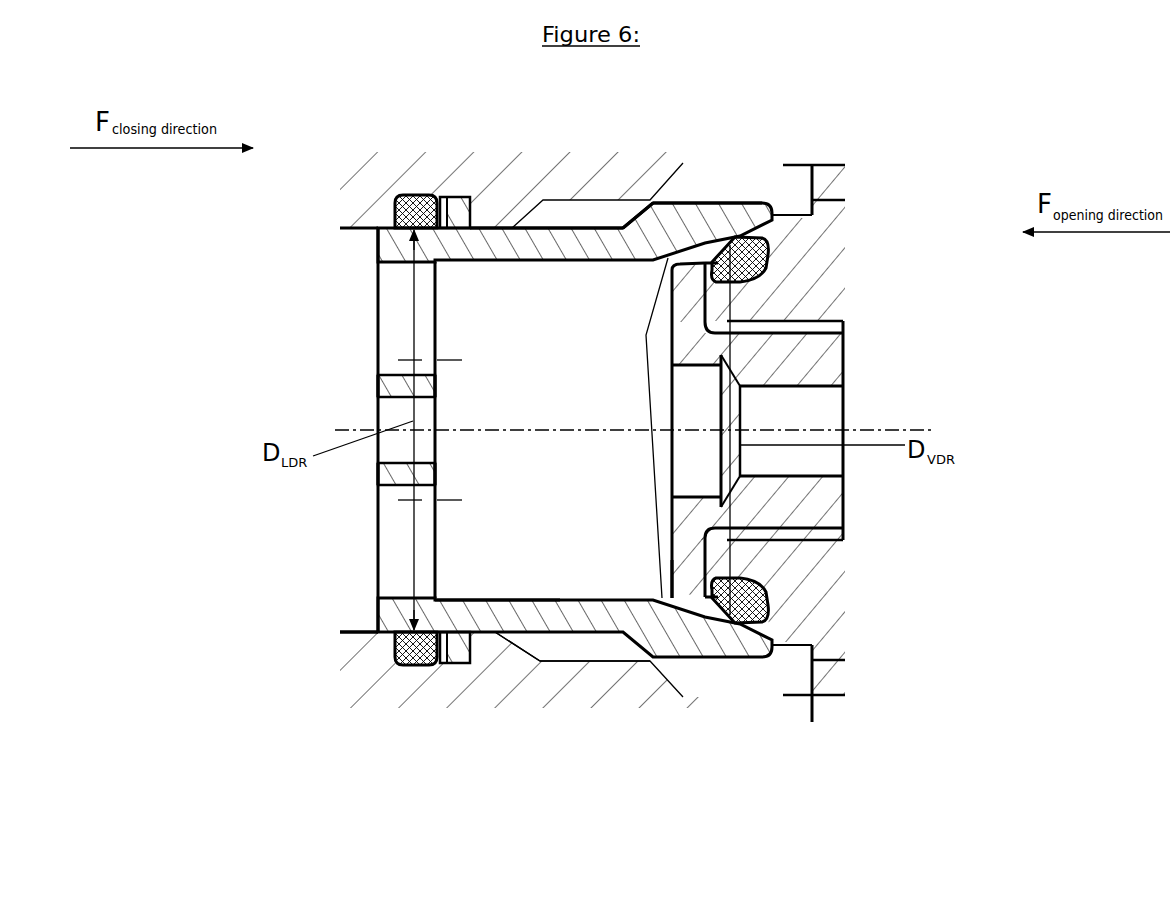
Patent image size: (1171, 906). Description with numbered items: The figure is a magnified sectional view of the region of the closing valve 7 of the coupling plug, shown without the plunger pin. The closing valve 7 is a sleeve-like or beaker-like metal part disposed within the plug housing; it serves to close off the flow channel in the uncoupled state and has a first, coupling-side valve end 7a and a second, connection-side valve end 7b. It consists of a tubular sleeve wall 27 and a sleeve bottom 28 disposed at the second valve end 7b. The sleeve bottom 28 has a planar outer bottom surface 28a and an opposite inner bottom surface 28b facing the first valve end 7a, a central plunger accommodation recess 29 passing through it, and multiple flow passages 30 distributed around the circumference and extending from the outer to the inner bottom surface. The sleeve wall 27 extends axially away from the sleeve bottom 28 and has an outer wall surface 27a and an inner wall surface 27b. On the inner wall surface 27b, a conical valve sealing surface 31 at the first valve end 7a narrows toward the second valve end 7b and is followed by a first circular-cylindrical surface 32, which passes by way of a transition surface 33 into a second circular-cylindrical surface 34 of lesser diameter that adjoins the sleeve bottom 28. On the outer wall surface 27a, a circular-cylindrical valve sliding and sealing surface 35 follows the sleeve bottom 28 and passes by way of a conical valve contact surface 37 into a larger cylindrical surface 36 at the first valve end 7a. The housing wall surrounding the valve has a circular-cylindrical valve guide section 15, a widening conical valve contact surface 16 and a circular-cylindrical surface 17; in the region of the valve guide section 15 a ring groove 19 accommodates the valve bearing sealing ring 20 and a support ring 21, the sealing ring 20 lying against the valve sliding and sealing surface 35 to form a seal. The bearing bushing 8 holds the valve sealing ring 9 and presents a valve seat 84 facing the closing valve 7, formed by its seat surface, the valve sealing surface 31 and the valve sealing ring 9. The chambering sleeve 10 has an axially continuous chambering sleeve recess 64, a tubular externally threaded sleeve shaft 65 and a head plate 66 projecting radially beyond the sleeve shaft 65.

The closing valve 7 is at (540, 247).
The first, coupling-side valve end 7a is at (782, 203).
The second, connection-side valve end 7b is at (357, 483).
The bearing bushing 8 is at (832, 275).
The valve sealing ring 9 is at (731, 243).
The chambering sleeve 10 is at (807, 511).
The circular-cylindrical valve guide section 15 is at (339, 691).
The widening, conical valve contact surface 16 is at (535, 697).
The circular-cylindrical surface 17 is at (595, 705).
The ring groove 19 is at (439, 197).
The valve bearing sealing ring 20 is at (403, 195).
The support ring 21 is at (462, 197).
The tubular sleeve wall 27 is at (491, 243).
The outer wall surface 27a is at (590, 226).
The inner wall surface 27b is at (471, 682).
The sleeve bottom 28 is at (382, 377).
The outer bottom surface 28a is at (375, 385).
The inner bottom surface 28b is at (370, 351).
The central plunger accommodation recess 29 is at (398, 408).
The flow passages 30 is at (398, 540).
The conical valve sealing surface 31 is at (806, 708).
The first circular-cylindrical surface 32 is at (663, 600).
The transition surface 33 is at (690, 562).
The second circular-cylindrical surface 34 is at (520, 682).
The circular-cylindrical valve sliding and sealing surface 35 is at (563, 226).
The cylindrical surface 36 is at (700, 201).
The conical valve contact surface 37 is at (634, 216).
The chambering sleeve recess 64 is at (792, 420).
The tubular sleeve shaft 65 is at (797, 355).
The head plate 66 is at (700, 587).
The valve seat 84 is at (778, 601).